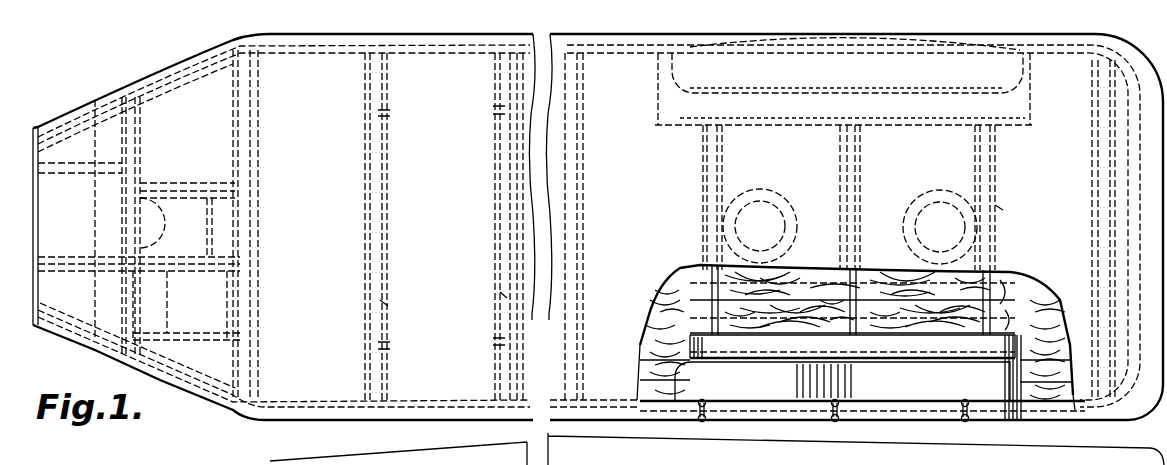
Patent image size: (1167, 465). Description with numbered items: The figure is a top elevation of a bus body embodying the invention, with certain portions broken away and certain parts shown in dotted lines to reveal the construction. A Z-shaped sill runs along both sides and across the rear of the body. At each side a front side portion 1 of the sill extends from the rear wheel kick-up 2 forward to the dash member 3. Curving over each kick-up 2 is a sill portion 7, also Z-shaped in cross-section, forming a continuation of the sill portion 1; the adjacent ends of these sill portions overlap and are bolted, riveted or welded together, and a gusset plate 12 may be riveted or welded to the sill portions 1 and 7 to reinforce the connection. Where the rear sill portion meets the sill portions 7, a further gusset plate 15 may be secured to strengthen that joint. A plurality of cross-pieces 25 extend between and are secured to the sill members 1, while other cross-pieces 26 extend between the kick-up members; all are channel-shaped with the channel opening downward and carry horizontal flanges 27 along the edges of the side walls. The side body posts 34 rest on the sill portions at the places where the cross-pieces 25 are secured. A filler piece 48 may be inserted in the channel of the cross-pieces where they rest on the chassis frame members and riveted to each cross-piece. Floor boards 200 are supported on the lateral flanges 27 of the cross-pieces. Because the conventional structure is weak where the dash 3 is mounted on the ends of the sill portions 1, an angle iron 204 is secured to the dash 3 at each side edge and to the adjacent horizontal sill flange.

The front side sill portion 1 is at (258, 412).
The rear wheel kick-up 2 is at (825, 80).
The dash member 3 is at (35, 274).
The kick-up sill portion 7 is at (762, 410).
The gusset plate 12 is at (693, 391).
The gusset plate 15 is at (1010, 412).
The cross-pieces 25 is at (250, 216).
The cross-pieces 26 is at (718, 172).
The horizontal flanges 27 is at (367, 300).
The side body posts 34 is at (699, 413).
The filler piece 48 is at (500, 110).
The floor boards 200 is at (668, 300).
The angle iron 204 is at (40, 310).